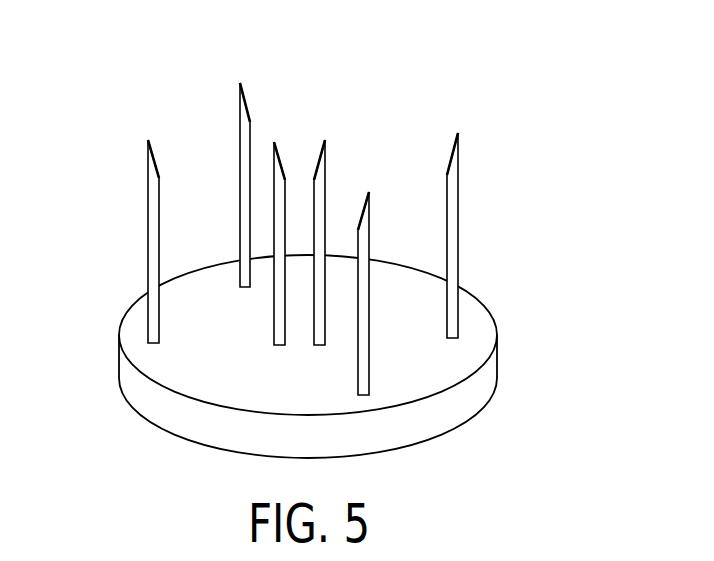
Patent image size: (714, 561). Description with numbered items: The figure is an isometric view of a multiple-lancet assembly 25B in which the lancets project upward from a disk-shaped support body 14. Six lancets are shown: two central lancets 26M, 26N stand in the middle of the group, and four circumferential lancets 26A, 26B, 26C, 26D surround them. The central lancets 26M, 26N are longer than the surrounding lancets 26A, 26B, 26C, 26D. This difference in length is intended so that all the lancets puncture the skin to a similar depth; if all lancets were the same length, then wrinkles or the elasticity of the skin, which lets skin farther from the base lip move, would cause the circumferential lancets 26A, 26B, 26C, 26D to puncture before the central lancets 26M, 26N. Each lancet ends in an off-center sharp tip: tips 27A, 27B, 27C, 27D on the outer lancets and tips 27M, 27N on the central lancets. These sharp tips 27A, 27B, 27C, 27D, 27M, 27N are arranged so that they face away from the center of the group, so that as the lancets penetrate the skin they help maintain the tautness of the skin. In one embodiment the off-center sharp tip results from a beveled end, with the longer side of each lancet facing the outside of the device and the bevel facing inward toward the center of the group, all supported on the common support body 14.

The support body 14 is at (497, 365).
The assembly 25B is at (327, 234).
The lancet 26A is at (240, 137).
The off center sharp tip 27A is at (240, 83).
The lancet 26B is at (459, 192).
The off center sharp tip 27B is at (459, 133).
The lancet 26C is at (148, 193).
The off center sharp tip 27C is at (148, 140).
The lancet 26D is at (369, 250).
The off center sharp tip 27D is at (369, 192).
The central lancet 26M is at (326, 188).
The off center sharp tip 27M is at (326, 141).
The central lancet 26N is at (287, 197).
The off center sharp tip 27N is at (278, 158).